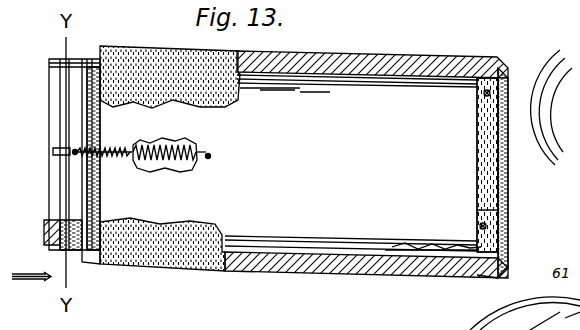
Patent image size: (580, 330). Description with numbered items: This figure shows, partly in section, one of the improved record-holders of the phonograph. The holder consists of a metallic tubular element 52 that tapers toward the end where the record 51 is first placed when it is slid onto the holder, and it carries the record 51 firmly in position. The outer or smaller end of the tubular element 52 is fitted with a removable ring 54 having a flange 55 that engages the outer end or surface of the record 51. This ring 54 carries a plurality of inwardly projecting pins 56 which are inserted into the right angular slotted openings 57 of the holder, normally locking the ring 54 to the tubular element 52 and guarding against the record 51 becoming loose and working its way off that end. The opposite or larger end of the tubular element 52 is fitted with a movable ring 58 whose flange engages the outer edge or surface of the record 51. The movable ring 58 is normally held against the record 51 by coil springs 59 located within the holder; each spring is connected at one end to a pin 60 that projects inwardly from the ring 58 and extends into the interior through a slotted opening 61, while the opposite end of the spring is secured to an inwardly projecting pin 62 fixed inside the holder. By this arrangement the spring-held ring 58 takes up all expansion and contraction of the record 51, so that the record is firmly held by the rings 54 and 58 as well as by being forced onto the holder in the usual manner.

The record 51 is at (333, 63).
The tubular element 52 is at (351, 163).
The removable ring 54 is at (488, 262).
The flange 55 is at (502, 200).
The inwardly projecting pins 56 is at (484, 95).
The right angular slotted openings 57 is at (477, 240).
The movable ring 58 is at (72, 202).
The coil springs 59 is at (166, 160).
The pins 60 is at (78, 150).
The slotted openings 61 is at (62, 155).
The inwardly projecting pin 62 is at (211, 157).